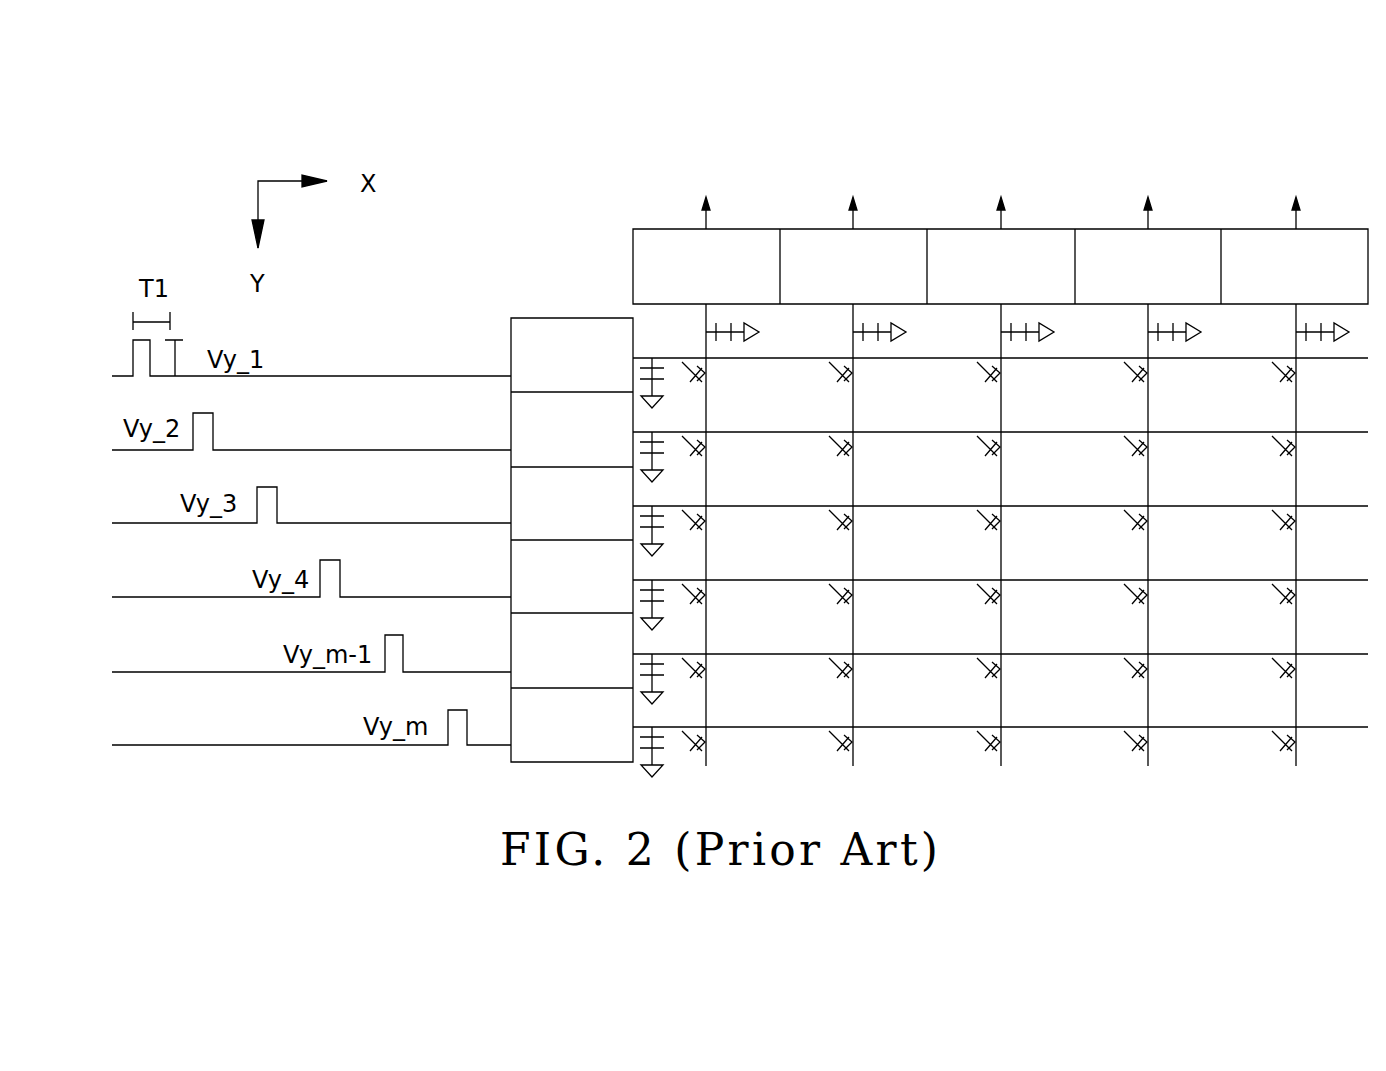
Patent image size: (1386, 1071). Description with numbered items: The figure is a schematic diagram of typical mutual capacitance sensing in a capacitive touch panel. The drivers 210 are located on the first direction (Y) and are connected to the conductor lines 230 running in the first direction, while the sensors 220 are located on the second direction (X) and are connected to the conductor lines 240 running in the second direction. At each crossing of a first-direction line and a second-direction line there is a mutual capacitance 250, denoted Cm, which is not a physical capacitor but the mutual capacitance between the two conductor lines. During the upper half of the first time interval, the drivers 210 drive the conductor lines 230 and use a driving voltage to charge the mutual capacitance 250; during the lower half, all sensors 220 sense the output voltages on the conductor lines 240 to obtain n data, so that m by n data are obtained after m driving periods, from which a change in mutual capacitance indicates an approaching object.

The driver 210 is at (524, 540).
The sensor 220 is at (972, 232).
The conductor line in the first direction 230 is at (672, 358).
The conductor line in the second direction 240 is at (692, 380).
The mutual capacitance 250 is at (1035, 757).